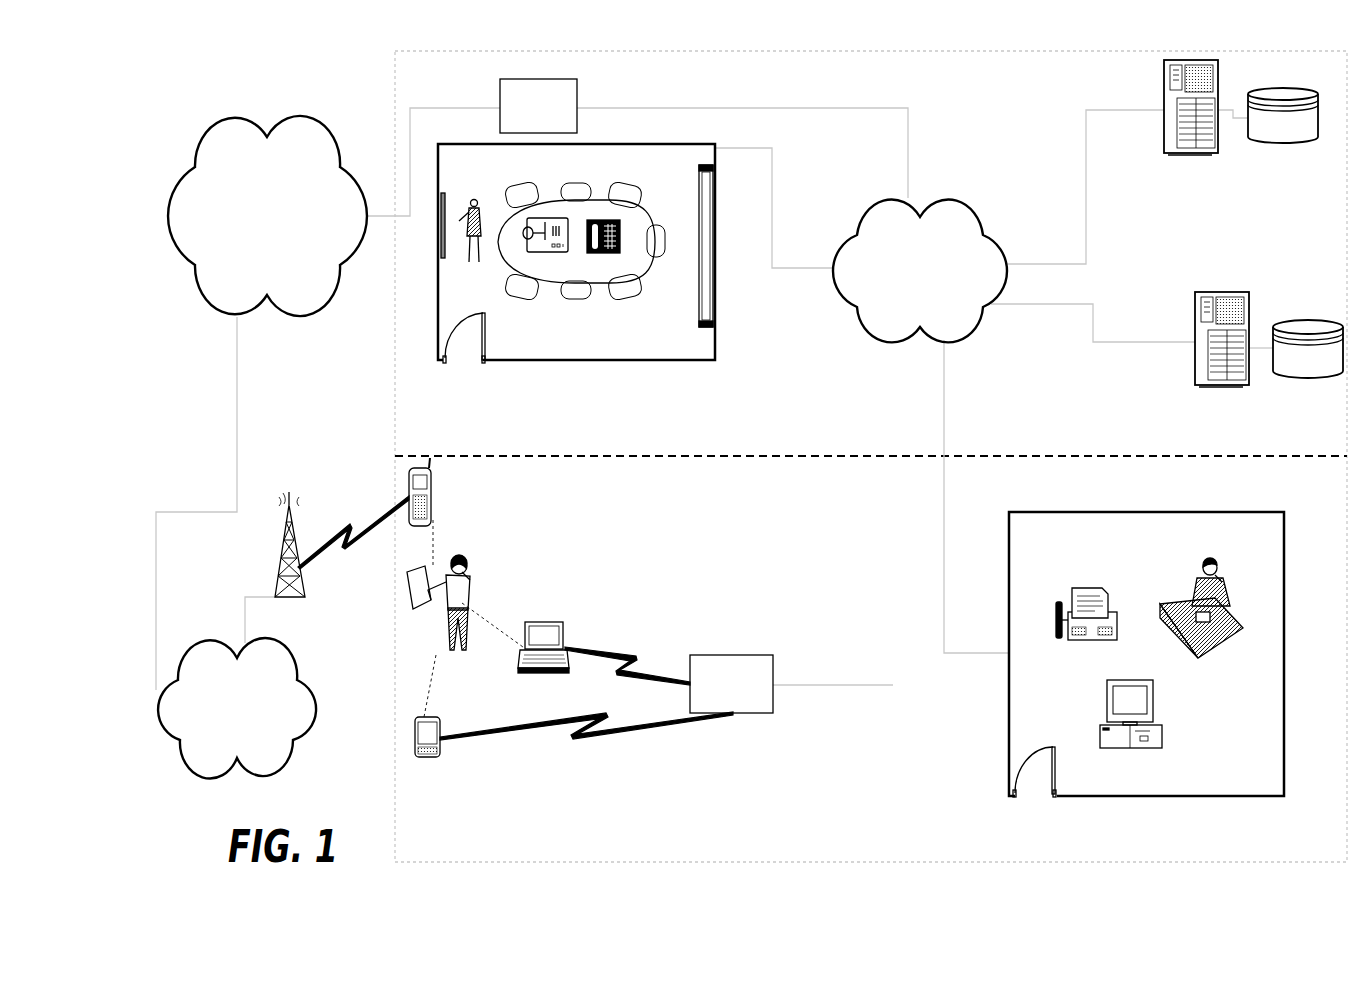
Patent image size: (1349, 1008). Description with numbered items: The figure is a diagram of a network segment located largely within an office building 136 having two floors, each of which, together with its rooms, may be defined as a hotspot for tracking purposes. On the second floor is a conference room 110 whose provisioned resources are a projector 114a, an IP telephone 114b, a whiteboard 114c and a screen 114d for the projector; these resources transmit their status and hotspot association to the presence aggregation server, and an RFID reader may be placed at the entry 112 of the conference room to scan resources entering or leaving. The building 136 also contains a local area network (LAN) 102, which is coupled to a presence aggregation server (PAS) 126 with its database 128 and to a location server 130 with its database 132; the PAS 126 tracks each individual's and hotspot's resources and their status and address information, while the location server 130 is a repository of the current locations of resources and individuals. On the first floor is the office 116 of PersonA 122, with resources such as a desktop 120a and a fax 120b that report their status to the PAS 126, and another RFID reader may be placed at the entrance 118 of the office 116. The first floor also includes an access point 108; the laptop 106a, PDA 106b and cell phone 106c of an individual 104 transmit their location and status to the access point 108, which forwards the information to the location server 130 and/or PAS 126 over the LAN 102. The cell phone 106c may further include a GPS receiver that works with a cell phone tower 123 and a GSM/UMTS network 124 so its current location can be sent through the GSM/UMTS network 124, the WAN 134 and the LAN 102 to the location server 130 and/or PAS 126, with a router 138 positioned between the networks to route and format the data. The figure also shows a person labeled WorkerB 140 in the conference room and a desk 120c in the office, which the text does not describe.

The local area network (LAN) 102 is at (903, 306).
The individual 104 is at (460, 577).
The laptop 106a is at (567, 627).
The PDA 106b is at (438, 715).
The cell phone 106c is at (433, 518).
The access point 108 is at (773, 715).
The conference room 110 is at (688, 358).
The entry of conference room 112 is at (463, 367).
The projector 114a is at (538, 252).
The IP telephone 114b is at (608, 270).
The whiteboard 114c is at (439, 237).
The screen 114d is at (710, 245).
The office 116 is at (1263, 798).
The entrance of office 118 is at (1030, 797).
The desktop 120a is at (1125, 750).
The fax 120b is at (1062, 635).
The desk 120c is at (1243, 633).
The PersonA 122 is at (1230, 600).
The cell phone tower 123 is at (297, 493).
The GSM/UMTS network 124 is at (219, 741).
The presence aggregation server (PAS) 126 is at (1164, 90).
The database 128 is at (1267, 135).
The location server 130 is at (1215, 293).
The database 132 is at (1292, 369).
The WAN 134 is at (250, 259).
The office building 136 is at (952, 862).
The router 138 is at (500, 80).
The WorkerB 140 is at (472, 200).